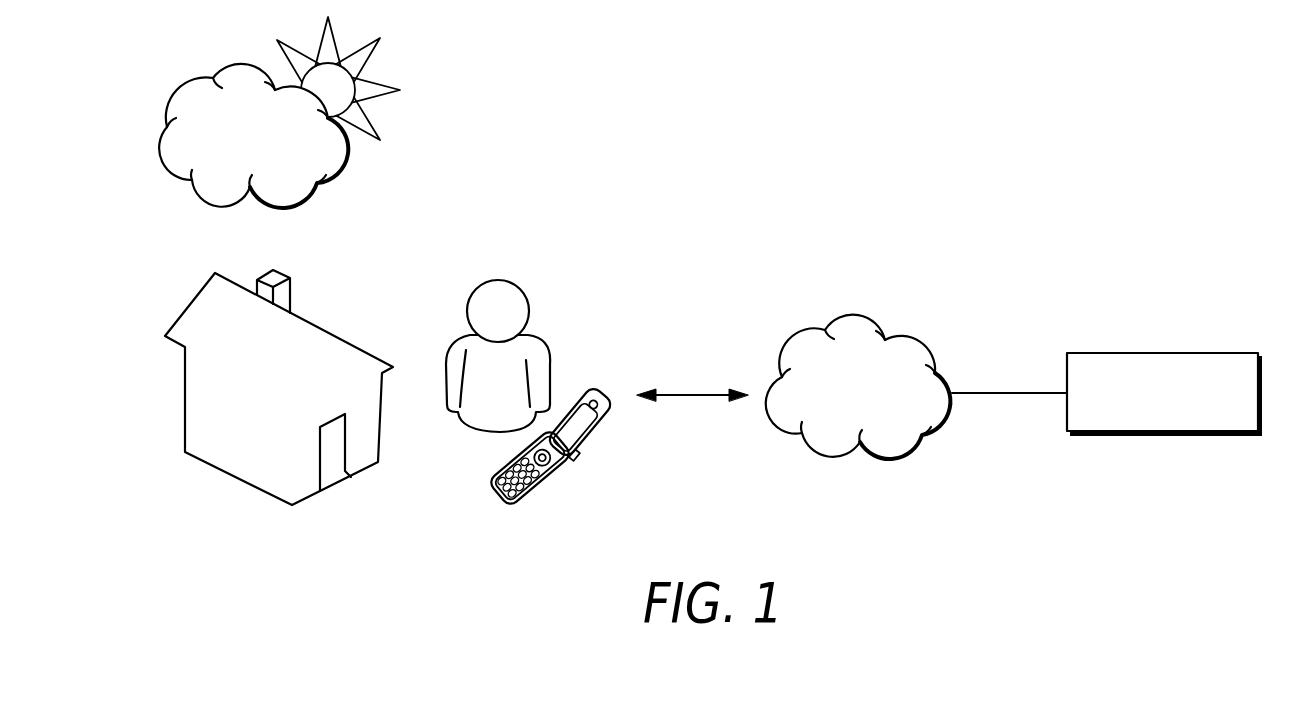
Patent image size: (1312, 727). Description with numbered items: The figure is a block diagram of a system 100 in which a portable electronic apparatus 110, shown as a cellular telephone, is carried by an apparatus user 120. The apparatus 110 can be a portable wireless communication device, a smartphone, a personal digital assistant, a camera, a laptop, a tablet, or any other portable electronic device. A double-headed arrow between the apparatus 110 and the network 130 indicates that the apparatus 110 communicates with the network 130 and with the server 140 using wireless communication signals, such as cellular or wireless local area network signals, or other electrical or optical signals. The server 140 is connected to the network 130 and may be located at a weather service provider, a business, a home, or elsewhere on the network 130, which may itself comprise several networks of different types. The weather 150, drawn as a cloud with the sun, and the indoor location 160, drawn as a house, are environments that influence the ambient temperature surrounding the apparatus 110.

The system 100 is at (1140, 103).
The apparatus 110 is at (551, 484).
The apparatus user 120 is at (512, 284).
The network 130 is at (893, 322).
The server 140 is at (1243, 353).
The weather 150 is at (163, 155).
The indoor location 160 is at (185, 397).